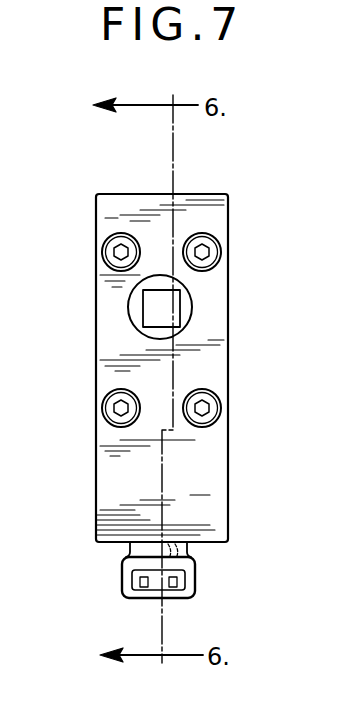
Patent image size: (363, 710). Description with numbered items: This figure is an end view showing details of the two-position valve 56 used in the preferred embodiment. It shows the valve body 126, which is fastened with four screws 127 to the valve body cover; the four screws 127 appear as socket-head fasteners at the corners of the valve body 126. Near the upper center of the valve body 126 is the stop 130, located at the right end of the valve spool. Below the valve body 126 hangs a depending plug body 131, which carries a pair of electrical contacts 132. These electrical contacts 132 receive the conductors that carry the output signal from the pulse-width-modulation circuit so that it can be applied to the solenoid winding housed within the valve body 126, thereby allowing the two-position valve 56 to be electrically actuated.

The valve body 126 is at (207, 505).
The screws 127 is at (119, 235).
The stop 130 is at (170, 310).
The plug body 131 is at (190, 571).
The electrical contacts 132 is at (163, 598).
The two-position valve 56 is at (259, 612).